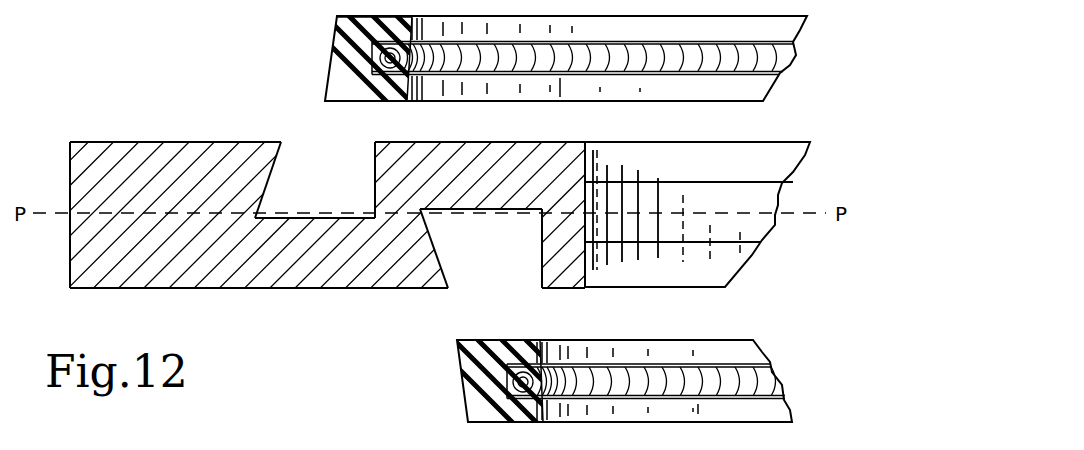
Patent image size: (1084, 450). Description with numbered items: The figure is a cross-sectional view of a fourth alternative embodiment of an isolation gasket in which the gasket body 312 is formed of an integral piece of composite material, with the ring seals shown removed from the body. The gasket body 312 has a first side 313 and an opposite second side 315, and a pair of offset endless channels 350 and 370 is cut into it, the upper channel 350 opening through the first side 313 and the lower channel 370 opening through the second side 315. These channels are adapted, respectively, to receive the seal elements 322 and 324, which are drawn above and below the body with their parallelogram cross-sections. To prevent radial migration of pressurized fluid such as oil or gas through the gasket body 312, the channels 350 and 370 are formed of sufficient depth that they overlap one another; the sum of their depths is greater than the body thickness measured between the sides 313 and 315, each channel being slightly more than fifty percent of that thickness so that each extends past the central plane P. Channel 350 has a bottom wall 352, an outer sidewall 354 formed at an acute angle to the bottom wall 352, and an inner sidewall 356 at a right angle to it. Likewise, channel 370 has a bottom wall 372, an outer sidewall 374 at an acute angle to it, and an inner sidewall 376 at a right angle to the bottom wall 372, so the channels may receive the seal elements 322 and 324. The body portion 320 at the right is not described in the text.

The gasket body 312 is at (388, 192).
The first side 313 is at (153, 142).
The second side 315 is at (221, 290).
The rail end portion 320 is at (733, 166).
The seal element 322 is at (331, 43).
The seal element 324 is at (665, 340).
The channel 350 is at (328, 148).
The bottom wall 352 is at (343, 217).
The outer sidewall 354 is at (278, 160).
The inner sidewall 356 is at (403, 165).
The channel 370 is at (493, 277).
The bottom wall 372 is at (457, 211).
The outer sidewall 374 is at (440, 254).
The inner sidewall 376 is at (575, 262).